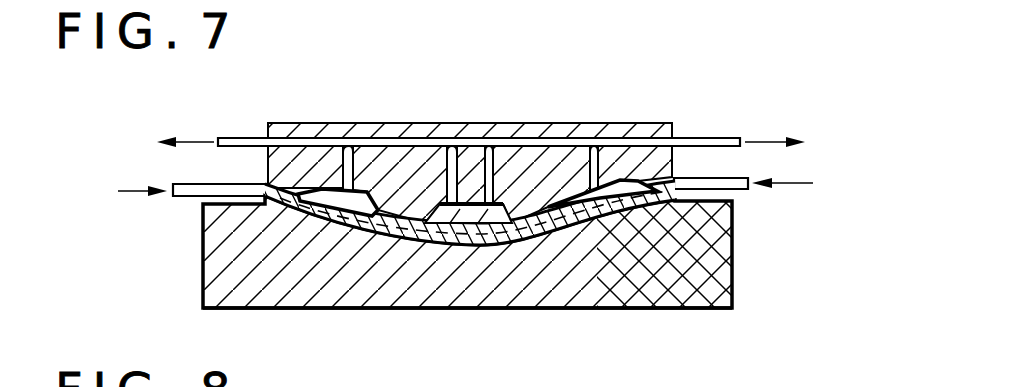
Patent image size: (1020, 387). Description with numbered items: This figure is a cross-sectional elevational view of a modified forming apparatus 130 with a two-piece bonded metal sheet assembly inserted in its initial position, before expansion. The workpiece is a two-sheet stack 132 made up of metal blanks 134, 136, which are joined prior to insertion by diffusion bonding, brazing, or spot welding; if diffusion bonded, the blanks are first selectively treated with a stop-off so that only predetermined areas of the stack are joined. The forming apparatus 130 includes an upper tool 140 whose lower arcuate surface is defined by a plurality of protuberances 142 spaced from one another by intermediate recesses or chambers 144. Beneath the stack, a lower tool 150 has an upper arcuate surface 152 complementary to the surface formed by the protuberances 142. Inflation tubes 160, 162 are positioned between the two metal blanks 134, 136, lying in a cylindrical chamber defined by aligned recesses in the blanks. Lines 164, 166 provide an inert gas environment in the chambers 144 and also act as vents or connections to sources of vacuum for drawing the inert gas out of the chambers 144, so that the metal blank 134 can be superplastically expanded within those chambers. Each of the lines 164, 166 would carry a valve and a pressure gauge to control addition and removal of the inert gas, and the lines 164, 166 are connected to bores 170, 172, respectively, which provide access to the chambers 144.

The forming apparatus 130 is at (685, 99).
The two-sheet stack 132 is at (501, 291).
The metal blank 134 is at (522, 254).
The metal blank 136 is at (665, 222).
The upper tool 140 is at (470, 145).
The protuberances 142 is at (468, 224).
The recesses or chambers 144 is at (335, 208).
The lower tool 150 is at (564, 308).
The upper arcuate surface 152 is at (396, 218).
The inflation tube 160 is at (738, 190).
The inflation tube 162 is at (202, 183).
The line 164 is at (712, 138).
The line 166 is at (236, 138).
The bore 170 is at (560, 138).
The bore 172 is at (384, 140).